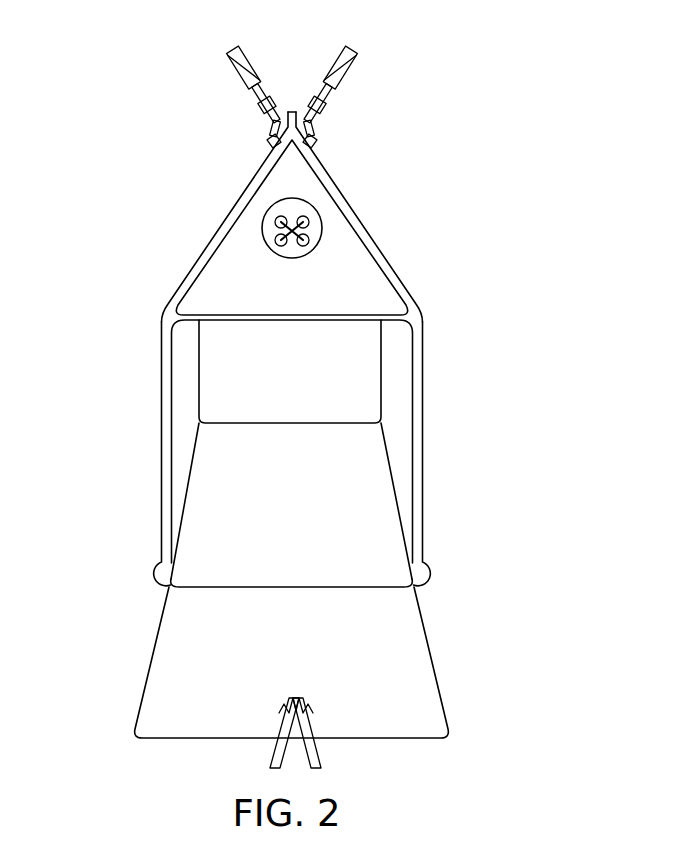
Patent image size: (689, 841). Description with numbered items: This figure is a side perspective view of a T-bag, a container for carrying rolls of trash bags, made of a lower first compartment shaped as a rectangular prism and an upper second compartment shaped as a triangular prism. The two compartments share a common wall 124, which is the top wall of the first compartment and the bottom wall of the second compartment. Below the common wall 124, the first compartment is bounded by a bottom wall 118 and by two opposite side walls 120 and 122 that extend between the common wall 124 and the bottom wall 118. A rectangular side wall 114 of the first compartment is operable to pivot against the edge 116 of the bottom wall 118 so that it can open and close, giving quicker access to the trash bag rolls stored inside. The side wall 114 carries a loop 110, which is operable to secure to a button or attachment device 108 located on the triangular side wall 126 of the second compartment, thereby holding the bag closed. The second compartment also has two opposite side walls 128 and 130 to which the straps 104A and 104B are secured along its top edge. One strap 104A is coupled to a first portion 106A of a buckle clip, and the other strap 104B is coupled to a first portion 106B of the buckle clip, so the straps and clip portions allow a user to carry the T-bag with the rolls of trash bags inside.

The strap 104A is at (270, 135).
The strap 104B is at (314, 135).
The first portion of buckle clip 106A is at (240, 83).
The first portion of buckle clip 106B is at (344, 83).
The button or attachment device 108 is at (297, 226).
The loop 110 is at (286, 713).
The side wall 114 is at (190, 653).
The edge 116 is at (348, 588).
The bottom wall 118 is at (210, 493).
The side wall 120 is at (177, 404).
The side wall 122 is at (407, 404).
The common wall 124 is at (332, 322).
The side wall 126 is at (347, 294).
The side wall 128 is at (215, 237).
The side wall 130 is at (383, 246).